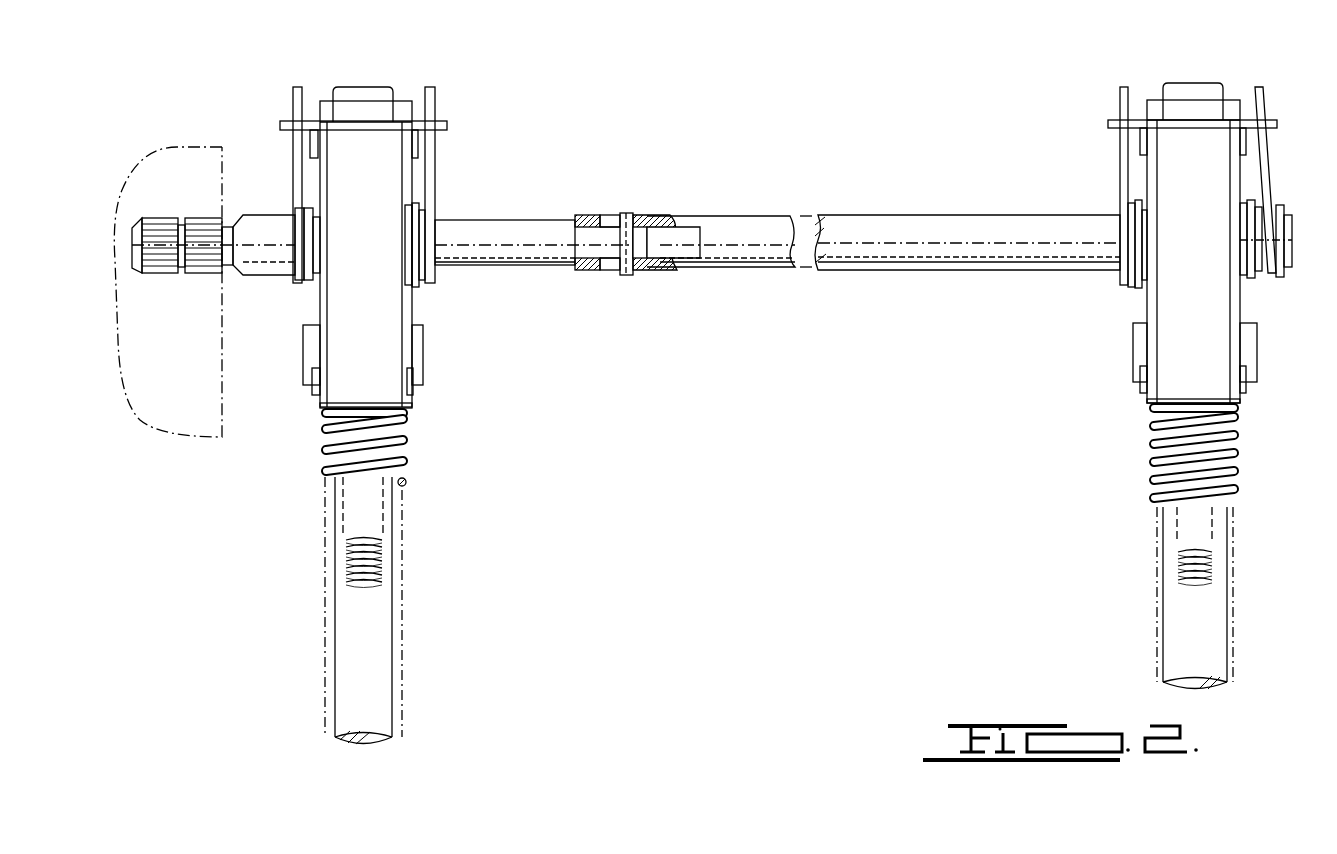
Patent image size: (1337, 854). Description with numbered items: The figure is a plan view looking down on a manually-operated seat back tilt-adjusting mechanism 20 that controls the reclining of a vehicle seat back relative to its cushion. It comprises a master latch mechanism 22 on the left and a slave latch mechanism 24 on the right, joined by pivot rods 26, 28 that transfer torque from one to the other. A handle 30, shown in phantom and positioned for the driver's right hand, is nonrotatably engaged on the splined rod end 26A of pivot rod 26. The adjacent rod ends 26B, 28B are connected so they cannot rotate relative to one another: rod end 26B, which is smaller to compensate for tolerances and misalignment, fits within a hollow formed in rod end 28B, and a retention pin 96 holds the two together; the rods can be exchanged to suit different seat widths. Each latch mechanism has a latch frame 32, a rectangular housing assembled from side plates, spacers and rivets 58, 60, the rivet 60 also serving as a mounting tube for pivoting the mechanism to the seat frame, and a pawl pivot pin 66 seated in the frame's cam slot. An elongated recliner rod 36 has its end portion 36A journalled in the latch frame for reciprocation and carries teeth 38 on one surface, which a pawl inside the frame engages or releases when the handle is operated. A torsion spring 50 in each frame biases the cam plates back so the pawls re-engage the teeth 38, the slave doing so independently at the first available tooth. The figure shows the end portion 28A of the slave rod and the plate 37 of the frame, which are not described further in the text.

The seat back tilt-adjusting mechanism 20 is at (788, 432).
The master latch mechanism 22 is at (470, 448).
The slave latch mechanism 24 is at (1050, 423).
The pivot rod 26 is at (532, 220).
The rod end 26A is at (157, 223).
The rod end 26B is at (602, 233).
The pivot rod 28 is at (875, 215).
The outer end of second shaft 28A is at (1275, 223).
The rod end 28B is at (657, 270).
The handle 30 is at (188, 395).
The latch frame 32 is at (1146, 185).
The recliner rod 36 is at (380, 678).
The end portion of recliner rod 36A is at (355, 85).
The flange plate 37 is at (402, 100).
The teeth 38 is at (365, 587).
The torsion spring 50 is at (297, 162).
The rivet 58 is at (420, 397).
The rivet 60 is at (423, 338).
The pawl pivot pin 66 is at (310, 240).
The retention pin 96 is at (628, 213).